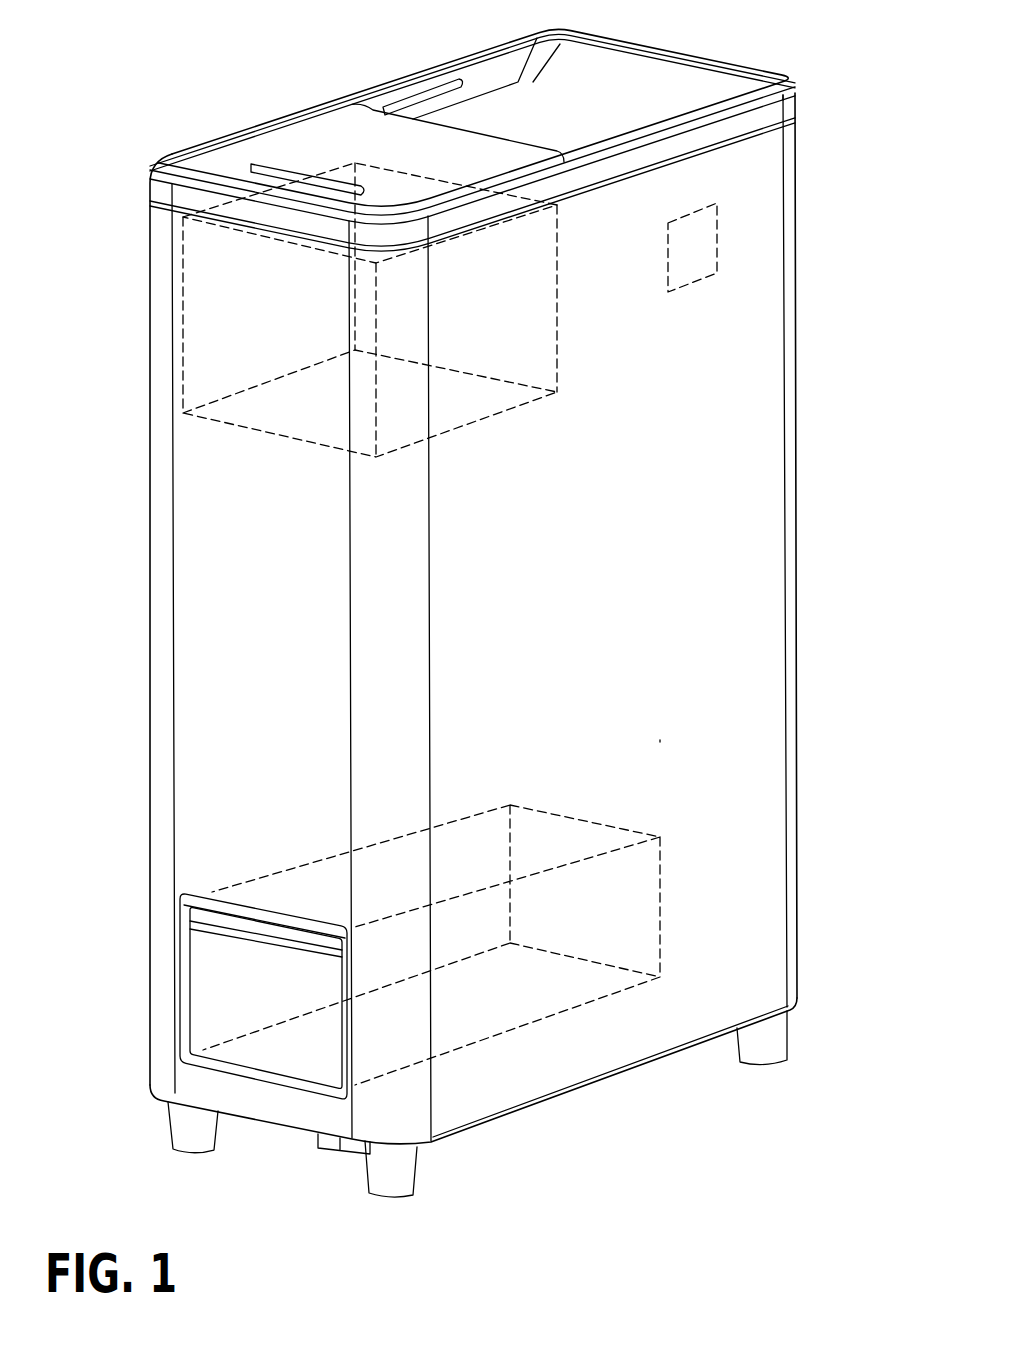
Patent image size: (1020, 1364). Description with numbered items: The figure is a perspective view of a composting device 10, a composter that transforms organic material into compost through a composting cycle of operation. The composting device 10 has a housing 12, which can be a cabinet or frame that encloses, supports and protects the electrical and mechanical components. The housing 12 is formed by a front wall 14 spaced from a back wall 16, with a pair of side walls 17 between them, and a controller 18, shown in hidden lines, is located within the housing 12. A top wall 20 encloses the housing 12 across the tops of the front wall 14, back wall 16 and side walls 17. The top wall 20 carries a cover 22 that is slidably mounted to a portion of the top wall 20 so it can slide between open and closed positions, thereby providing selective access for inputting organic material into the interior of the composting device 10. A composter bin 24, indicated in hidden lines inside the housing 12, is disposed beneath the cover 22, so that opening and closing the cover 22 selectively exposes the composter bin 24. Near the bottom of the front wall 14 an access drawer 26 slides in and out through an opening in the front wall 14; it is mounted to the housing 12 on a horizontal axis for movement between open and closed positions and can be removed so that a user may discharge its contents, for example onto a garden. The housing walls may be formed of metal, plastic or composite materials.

The composting device 10 is at (232, 43).
The housing 12 is at (814, 482).
The front wall 14 is at (250, 543).
The back wall 16 is at (801, 668).
The side walls 17 is at (663, 732).
The controller 18 is at (697, 280).
The top wall 20 is at (528, 108).
The cover 22 is at (307, 137).
The composter bin 24 is at (183, 327).
The access drawer 26 is at (217, 958).